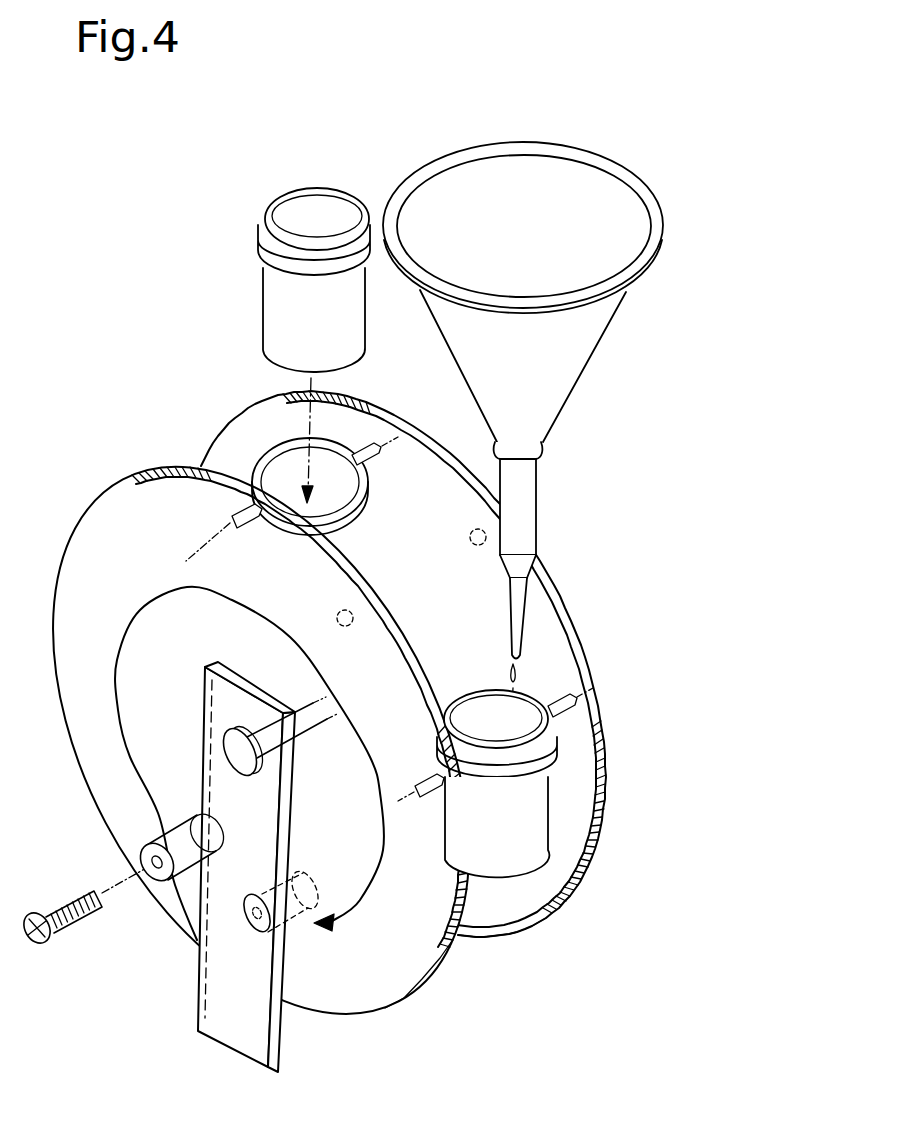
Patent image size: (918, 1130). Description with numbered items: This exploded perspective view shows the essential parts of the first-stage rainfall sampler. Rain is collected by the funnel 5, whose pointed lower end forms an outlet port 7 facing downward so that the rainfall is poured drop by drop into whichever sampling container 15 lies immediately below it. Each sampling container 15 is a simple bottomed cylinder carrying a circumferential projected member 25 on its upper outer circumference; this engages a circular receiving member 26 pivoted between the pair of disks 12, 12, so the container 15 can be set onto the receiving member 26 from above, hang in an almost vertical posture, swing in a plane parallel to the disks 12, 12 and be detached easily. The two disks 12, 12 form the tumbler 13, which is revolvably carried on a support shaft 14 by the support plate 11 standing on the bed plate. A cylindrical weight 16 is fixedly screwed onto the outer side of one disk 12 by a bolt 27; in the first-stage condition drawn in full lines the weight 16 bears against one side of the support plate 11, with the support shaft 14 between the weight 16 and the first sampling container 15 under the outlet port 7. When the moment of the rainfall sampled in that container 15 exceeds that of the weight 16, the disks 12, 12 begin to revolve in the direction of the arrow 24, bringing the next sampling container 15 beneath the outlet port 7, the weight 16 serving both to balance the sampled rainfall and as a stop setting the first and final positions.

The funnel 5 is at (533, 412).
The outlet port 7 is at (540, 634).
The support plate 11 is at (254, 1034).
The disk 12 is at (514, 907).
The tumbler 13 is at (594, 938).
The support shaft 14 is at (228, 755).
The sampling container 15 is at (425, 532).
The weight 16 is at (187, 870).
The arrow 24 is at (347, 703).
The circumferential projected member 25 is at (272, 257).
The circular receiving member 26 is at (360, 512).
The screw 27 is at (34, 946).